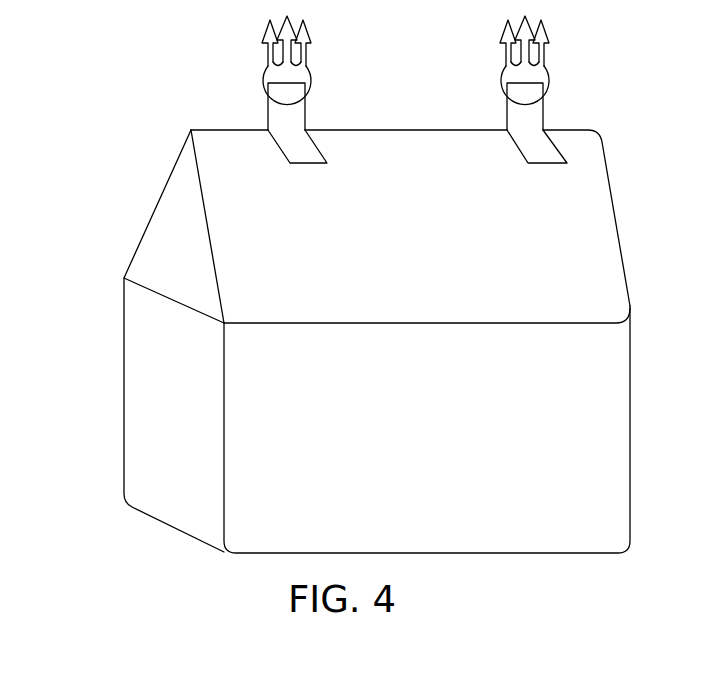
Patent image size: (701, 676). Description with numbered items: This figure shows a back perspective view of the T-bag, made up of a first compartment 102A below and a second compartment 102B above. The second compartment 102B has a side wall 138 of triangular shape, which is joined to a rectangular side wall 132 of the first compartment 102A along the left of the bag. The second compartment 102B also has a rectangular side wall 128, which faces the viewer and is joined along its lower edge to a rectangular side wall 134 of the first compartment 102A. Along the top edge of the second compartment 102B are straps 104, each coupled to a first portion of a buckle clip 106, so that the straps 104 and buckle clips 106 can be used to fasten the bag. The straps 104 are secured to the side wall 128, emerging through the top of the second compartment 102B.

The first compartment 102A is at (333, 415).
The second compartment 102B is at (335, 226).
The strap 104 is at (315, 118).
The buckle clip 106 is at (316, 76).
The side wall 128 is at (435, 248).
The side wall 132 is at (160, 398).
The side wall 134 is at (435, 456).
The side wall 138 is at (172, 218).